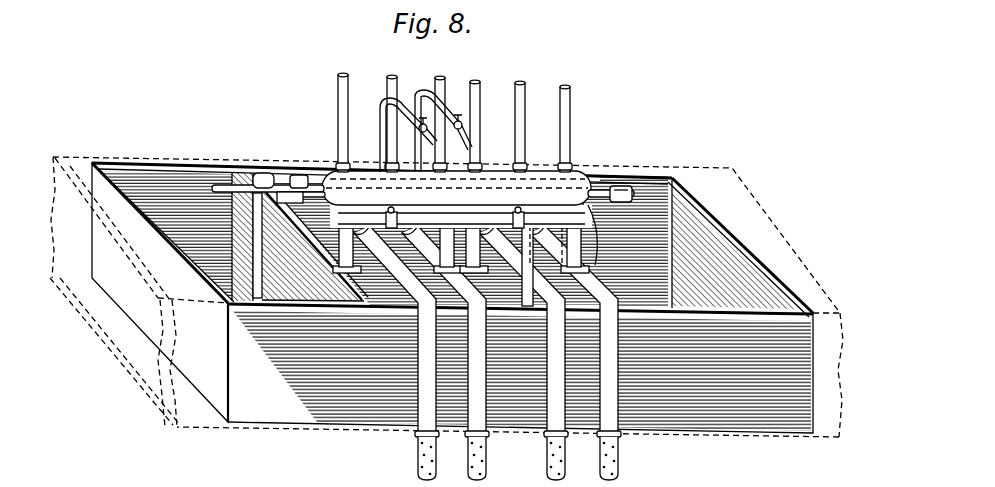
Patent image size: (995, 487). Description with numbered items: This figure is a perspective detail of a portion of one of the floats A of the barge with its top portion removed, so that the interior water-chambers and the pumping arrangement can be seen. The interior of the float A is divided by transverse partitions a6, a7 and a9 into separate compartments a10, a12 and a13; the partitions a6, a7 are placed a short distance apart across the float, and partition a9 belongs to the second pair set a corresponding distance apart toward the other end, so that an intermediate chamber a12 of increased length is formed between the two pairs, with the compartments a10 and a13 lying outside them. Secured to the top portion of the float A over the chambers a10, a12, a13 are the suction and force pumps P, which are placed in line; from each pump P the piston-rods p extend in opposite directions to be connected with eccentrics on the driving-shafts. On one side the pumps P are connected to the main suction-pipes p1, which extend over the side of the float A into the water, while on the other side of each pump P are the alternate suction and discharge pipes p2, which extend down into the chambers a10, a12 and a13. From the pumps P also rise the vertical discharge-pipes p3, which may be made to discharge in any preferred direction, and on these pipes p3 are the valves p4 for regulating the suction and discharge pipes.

The float A is at (451, 300).
The transverse partition a6 is at (101, 163).
The transverse partition a7 is at (240, 173).
The transverse partition a9 is at (675, 176).
The compartment a10 is at (168, 177).
The intermediate chamber a12 is at (293, 170).
The compartment a13 is at (620, 183).
The suction and force pump P is at (459, 218).
The piston-rod p is at (217, 184).
The main suction-pipe p1 is at (420, 426).
The alternate suction and discharge pipe p2 is at (260, 175).
The vertical discharge-pipe p3 is at (528, 88).
The valve p4 is at (460, 124).